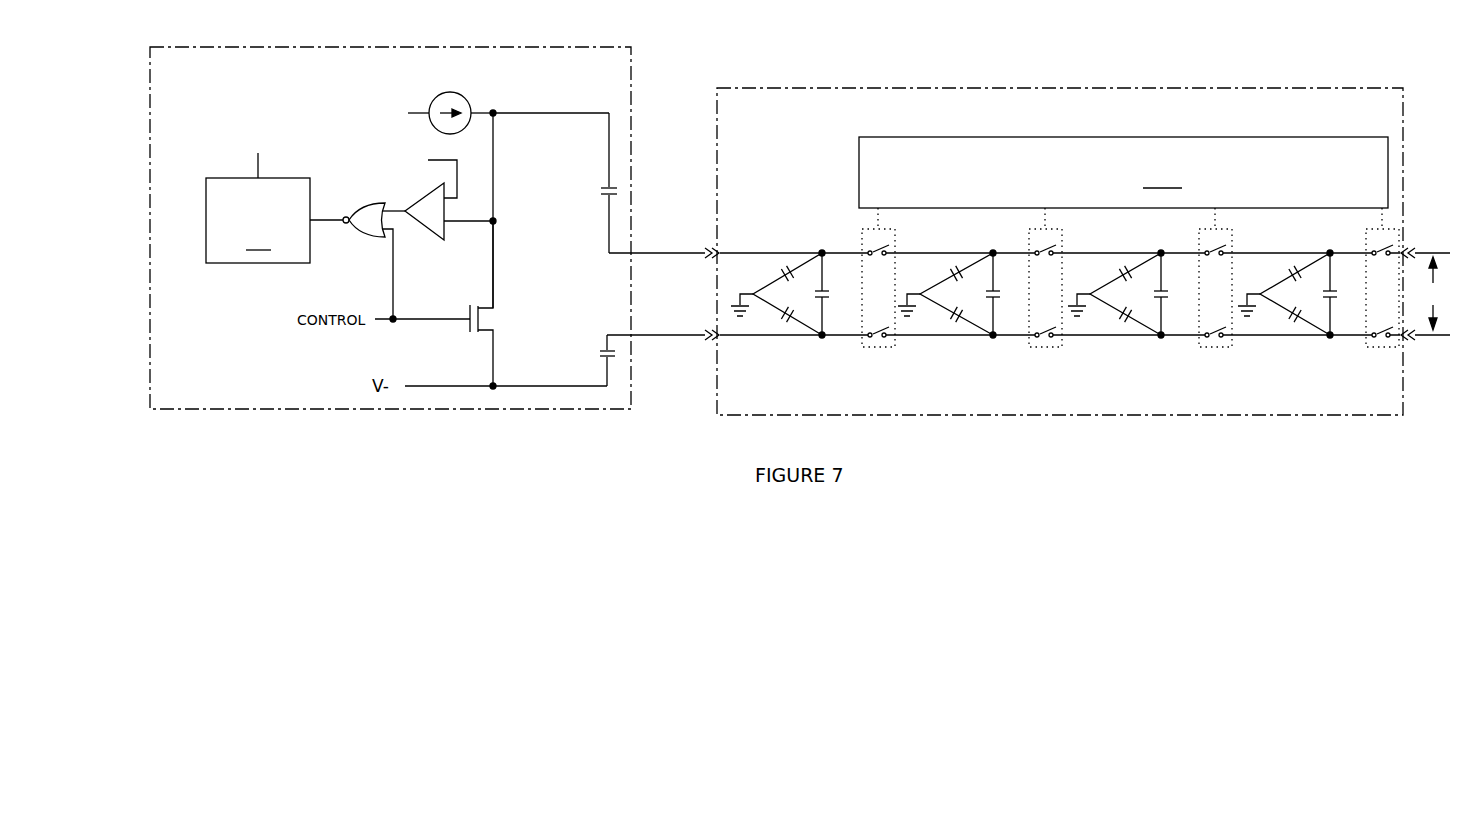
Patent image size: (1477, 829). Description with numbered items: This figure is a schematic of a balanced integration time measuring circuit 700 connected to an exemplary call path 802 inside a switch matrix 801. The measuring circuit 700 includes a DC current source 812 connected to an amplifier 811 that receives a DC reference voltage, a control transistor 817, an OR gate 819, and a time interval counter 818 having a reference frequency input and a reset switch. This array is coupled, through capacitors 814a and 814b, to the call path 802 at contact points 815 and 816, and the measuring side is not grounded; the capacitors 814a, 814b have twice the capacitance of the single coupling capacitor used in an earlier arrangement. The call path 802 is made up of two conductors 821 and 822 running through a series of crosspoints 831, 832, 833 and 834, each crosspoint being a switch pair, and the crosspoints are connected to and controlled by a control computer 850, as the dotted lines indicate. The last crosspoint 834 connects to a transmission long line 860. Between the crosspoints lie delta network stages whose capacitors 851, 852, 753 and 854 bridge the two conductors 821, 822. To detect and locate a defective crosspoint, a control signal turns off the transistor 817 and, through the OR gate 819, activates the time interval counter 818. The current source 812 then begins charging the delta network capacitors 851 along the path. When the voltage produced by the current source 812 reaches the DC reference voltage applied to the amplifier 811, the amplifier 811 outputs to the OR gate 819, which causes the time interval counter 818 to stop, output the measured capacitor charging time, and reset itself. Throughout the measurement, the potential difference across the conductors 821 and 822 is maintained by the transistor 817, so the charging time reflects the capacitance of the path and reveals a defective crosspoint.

The readout circuit 700 is at (641, 60).
The switch matrix 801 is at (1175, 86).
The call path 802 is at (712, 300).
The amplifier 811 is at (438, 232).
The DC current source 812 is at (461, 103).
The capacitor 814a is at (601, 184).
The capacitor 814b is at (597, 352).
The contact point 815 is at (696, 245).
The contact point 816 is at (708, 345).
The control transistor 817 is at (499, 319).
The time interval counter 818 is at (274, 194).
The OR gate 819 is at (374, 238).
The conductor 821 is at (736, 247).
The conductor 822 is at (738, 341).
The crosspoint 831 is at (899, 242).
The crosspoint 832 is at (1066, 242).
The crosspoint 833 is at (1236, 242).
The last crosspoint 834 is at (1362, 350).
The control computer 850 is at (1123, 183).
The delta network capacitors 851 is at (813, 301).
The integrator amplifier 852 is at (974, 301).
The integrator amplifier 753 is at (1146, 301).
The integrator amplifier 854 is at (1315, 301).
The transmission long line 860 is at (1430, 293).